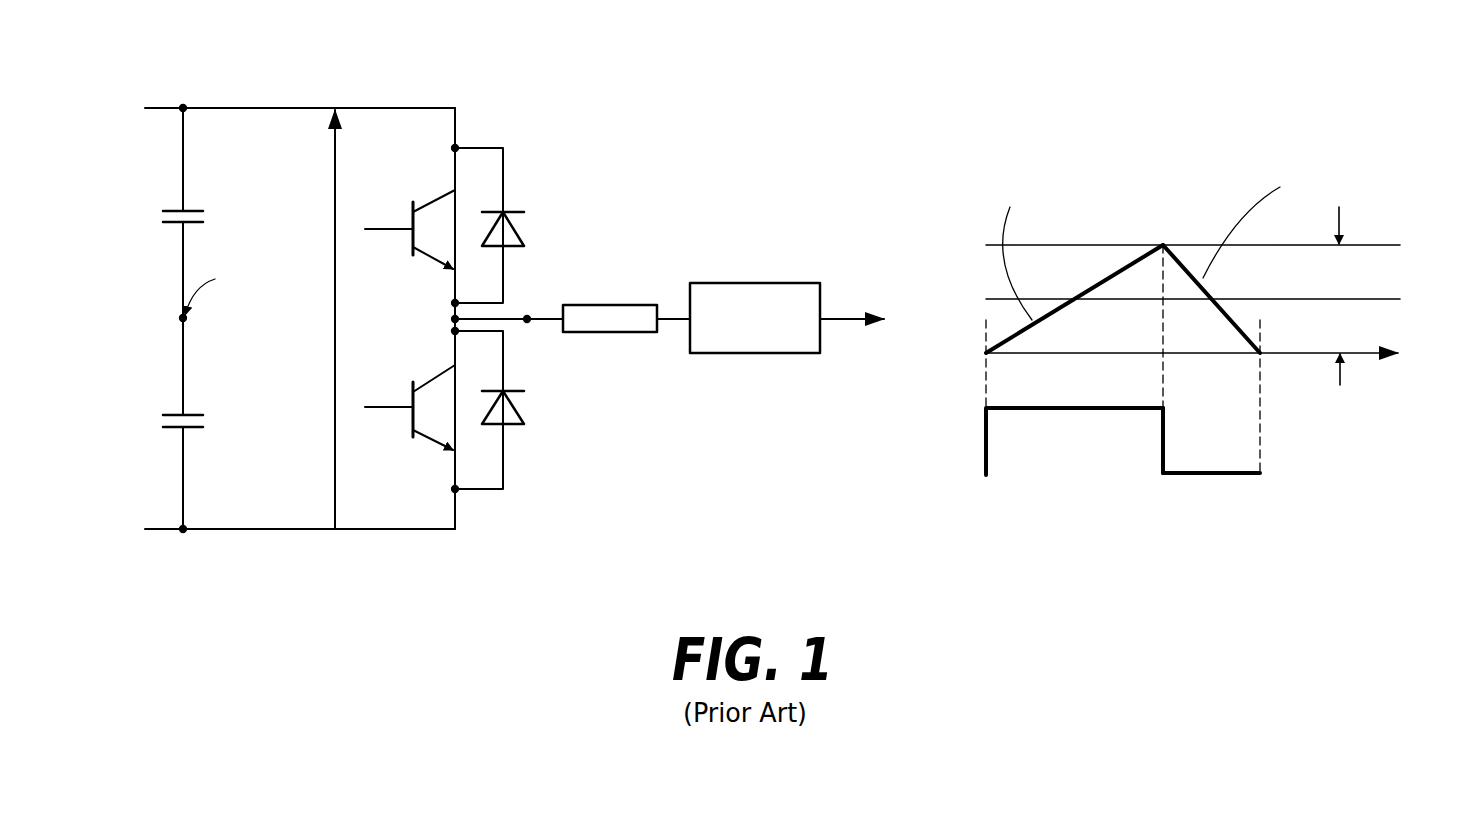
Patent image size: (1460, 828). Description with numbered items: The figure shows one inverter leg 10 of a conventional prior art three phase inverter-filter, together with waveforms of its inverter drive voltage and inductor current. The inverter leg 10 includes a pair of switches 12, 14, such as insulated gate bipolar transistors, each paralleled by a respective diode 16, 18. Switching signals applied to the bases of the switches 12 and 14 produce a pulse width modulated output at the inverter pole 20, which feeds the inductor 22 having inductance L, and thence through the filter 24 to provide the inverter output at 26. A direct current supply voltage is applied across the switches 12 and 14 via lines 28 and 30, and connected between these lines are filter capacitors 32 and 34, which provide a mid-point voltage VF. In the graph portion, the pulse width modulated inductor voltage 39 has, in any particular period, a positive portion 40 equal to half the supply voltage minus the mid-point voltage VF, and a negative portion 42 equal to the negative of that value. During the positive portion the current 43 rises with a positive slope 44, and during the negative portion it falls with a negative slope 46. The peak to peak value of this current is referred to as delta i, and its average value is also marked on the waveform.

The inverter leg 10 is at (552, 52).
The switch 12 is at (442, 196).
The switch 14 is at (428, 436).
The diode 16 is at (517, 212).
The diode 18 is at (512, 427).
The inverter pole 20 is at (528, 312).
The inductor 22 is at (627, 303).
The filter 24 is at (748, 283).
The inverter output 26 is at (850, 315).
The line 28 is at (220, 110).
The line 30 is at (235, 529).
The filter capacitor 32 is at (172, 224).
The filter capacitor 34 is at (172, 429).
The pulse width modulated inductor voltage 39 is at (1170, 417).
The positive portion 40 is at (1048, 408).
The negative portion 42 is at (1208, 468).
The current 43 is at (1188, 225).
The positive slope 44 is at (1123, 267).
The negative slope 46 is at (1206, 287).